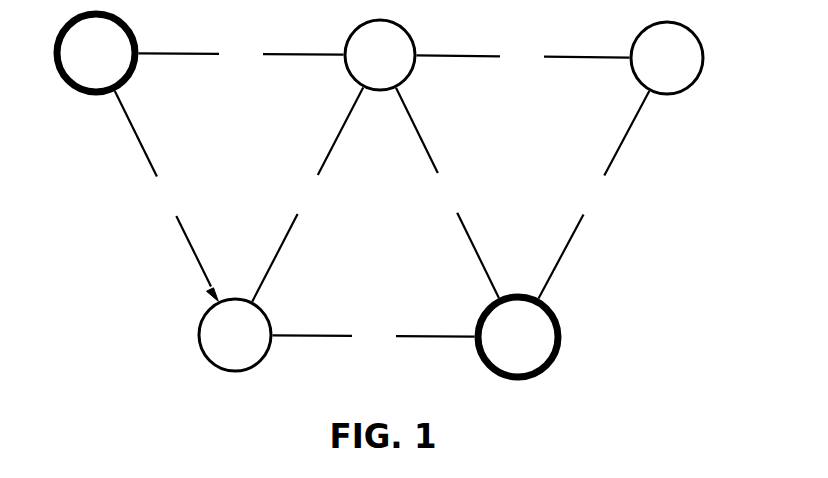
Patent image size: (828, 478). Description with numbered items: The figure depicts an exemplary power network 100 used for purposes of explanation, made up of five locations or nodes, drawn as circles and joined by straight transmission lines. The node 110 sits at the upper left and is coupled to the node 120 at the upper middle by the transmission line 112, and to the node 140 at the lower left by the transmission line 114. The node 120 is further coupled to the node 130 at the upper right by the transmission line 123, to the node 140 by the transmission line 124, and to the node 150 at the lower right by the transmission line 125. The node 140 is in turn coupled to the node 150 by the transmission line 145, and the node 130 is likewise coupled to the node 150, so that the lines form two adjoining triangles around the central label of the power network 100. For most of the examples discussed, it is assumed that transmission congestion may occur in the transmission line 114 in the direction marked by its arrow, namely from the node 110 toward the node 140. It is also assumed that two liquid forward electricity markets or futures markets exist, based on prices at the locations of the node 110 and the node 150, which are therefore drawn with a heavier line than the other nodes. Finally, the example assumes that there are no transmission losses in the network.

The power network 100 is at (380, 195).
The node 110 is at (77, 65).
The node 120 is at (361, 67).
The node 130 is at (648, 70).
The node 140 is at (216, 347).
The node 150 is at (499, 349).
The transmission line 112 is at (222, 65).
The transmission line 114 is at (167, 196).
The transmission line 123 is at (503, 68).
The transmission line 124 is at (307, 194).
The transmission line 125 is at (447, 193).
The transmission line 145 is at (355, 347).